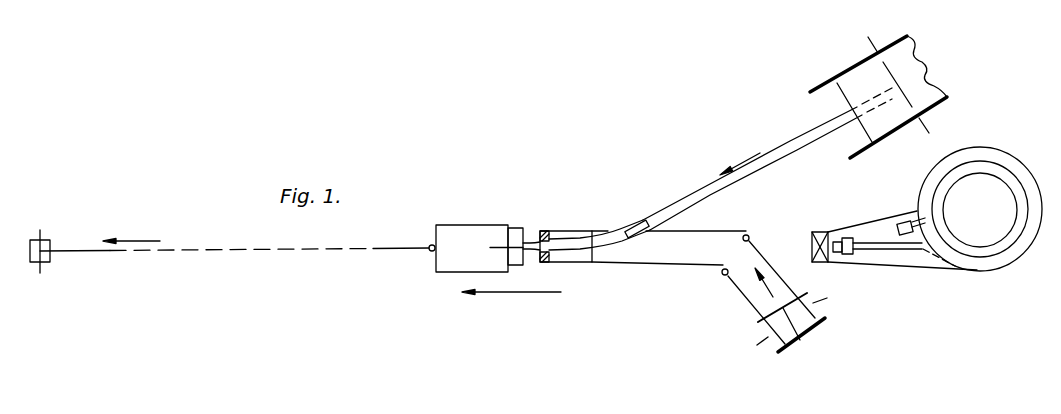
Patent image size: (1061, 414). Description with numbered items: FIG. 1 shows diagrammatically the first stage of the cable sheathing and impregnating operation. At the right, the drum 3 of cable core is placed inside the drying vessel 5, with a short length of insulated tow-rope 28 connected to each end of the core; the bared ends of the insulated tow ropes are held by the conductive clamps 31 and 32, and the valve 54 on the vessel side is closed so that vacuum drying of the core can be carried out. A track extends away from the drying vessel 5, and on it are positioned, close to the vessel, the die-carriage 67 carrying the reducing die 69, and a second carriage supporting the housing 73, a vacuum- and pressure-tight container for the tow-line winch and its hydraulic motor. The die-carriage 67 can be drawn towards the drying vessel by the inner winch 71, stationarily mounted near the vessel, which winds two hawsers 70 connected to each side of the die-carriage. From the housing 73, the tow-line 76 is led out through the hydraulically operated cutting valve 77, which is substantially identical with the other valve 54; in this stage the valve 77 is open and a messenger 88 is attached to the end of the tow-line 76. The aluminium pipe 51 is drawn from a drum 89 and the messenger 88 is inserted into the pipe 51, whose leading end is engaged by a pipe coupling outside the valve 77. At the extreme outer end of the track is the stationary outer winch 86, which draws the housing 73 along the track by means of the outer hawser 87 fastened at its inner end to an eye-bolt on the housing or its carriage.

The drum of core 3 is at (983, 238).
The drying vessel 5 is at (1012, 262).
The insulated tow-rope 28 is at (903, 250).
The conductive clamp 31 is at (847, 255).
The conductive clamp 32 is at (900, 223).
The aluminium pipe 51 is at (712, 188).
The valve 54 is at (826, 231).
The die-carriage 67 is at (568, 232).
The reducing die 69 is at (541, 229).
The hawsers 70 is at (779, 275).
The inner winch 71 is at (805, 335).
The housing 73 is at (457, 232).
The tow-line 76 is at (601, 238).
The cutting valve 77 is at (515, 231).
The outer winch 86 is at (47, 243).
The outer hawser 87 is at (240, 248).
The messenger 88 is at (642, 232).
The drum 89 is at (822, 94).